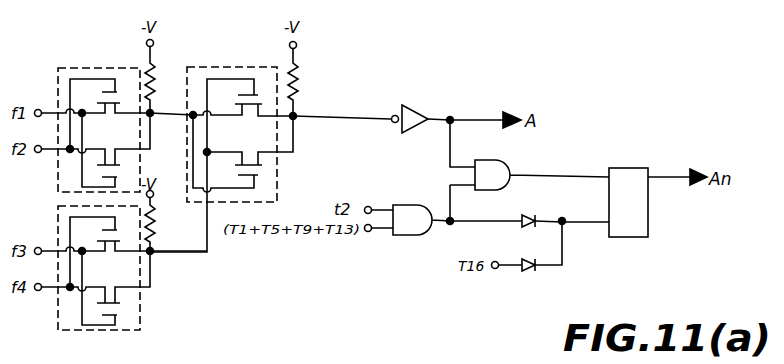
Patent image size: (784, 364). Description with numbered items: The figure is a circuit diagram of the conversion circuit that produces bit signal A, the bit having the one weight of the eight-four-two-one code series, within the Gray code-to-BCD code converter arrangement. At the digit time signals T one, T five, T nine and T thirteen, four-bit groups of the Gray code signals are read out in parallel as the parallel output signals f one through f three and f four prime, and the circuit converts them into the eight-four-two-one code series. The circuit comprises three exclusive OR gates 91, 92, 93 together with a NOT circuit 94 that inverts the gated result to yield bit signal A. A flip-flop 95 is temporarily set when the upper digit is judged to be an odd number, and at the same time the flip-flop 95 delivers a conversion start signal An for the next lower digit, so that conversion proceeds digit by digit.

The exclusive OR gate 91 is at (82, 68).
The exclusive OR gate 92 is at (140, 329).
The exclusive OR gate 93 is at (221, 67).
The NOT circuit 94 is at (412, 110).
The flip-flop 95 is at (640, 156).